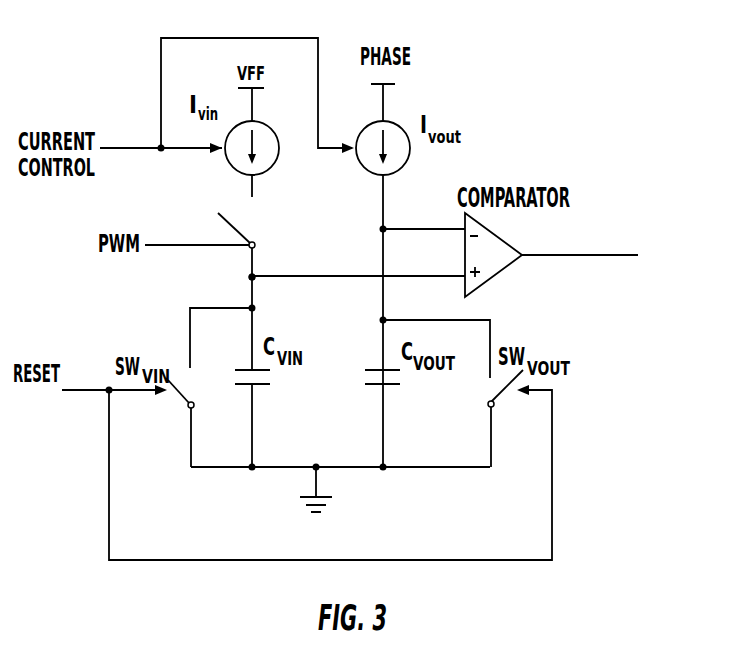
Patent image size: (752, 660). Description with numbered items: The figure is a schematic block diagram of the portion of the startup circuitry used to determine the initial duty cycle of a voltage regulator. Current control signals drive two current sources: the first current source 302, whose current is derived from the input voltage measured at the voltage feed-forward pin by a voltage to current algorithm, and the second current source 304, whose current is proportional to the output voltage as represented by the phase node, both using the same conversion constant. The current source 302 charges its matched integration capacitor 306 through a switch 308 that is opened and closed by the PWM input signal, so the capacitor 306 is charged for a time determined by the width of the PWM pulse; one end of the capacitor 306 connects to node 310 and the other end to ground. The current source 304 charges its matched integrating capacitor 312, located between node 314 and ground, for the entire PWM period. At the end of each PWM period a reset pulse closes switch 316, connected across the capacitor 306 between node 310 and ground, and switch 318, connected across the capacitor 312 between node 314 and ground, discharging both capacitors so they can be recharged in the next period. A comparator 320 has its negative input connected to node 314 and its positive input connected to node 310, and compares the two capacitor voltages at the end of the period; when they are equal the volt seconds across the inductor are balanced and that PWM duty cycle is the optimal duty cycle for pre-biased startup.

The current source IVIN 302 is at (237, 163).
The current source IVOUT 304 is at (398, 170).
The integration capacitor CVIN 306 is at (258, 386).
The switch 308 is at (256, 245).
The node 310 is at (254, 279).
The integrating capacitor CVOUT 312 is at (390, 386).
The node 314 is at (378, 229).
The switch 316 is at (188, 408).
The switch 318 is at (493, 406).
The comparator 320 is at (497, 272).